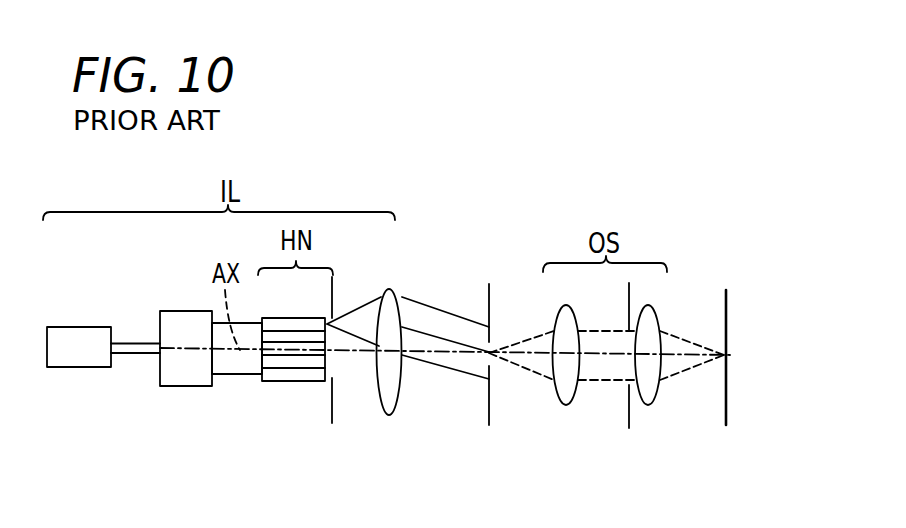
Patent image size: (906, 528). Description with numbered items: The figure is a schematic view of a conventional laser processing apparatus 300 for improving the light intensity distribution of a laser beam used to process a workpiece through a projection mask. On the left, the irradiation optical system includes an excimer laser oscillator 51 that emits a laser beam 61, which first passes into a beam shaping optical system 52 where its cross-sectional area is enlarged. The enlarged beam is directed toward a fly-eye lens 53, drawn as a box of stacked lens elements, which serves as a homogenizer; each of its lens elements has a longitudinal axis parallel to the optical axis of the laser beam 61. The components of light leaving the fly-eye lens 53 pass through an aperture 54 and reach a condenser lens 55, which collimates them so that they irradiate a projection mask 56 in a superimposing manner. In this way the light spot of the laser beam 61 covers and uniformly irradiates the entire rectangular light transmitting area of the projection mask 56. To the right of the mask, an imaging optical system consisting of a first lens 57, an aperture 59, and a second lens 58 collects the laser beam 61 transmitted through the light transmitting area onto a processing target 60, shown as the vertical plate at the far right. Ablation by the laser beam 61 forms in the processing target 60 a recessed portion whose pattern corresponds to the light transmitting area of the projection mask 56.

The laser processing apparatus 300 is at (513, 153).
The excimer laser oscillator 51 is at (76, 361).
The laser beam 61 is at (137, 357).
The beam shaping optical system 52 is at (185, 378).
The fly-eye lens 53 is at (275, 378).
The aperture 54 is at (332, 413).
The condenser lens 55 is at (389, 401).
The projection mask 56 is at (488, 413).
The lens 57 is at (566, 398).
The aperture 59 is at (628, 412).
The lens 58 is at (652, 394).
The processing target 60 is at (727, 404).